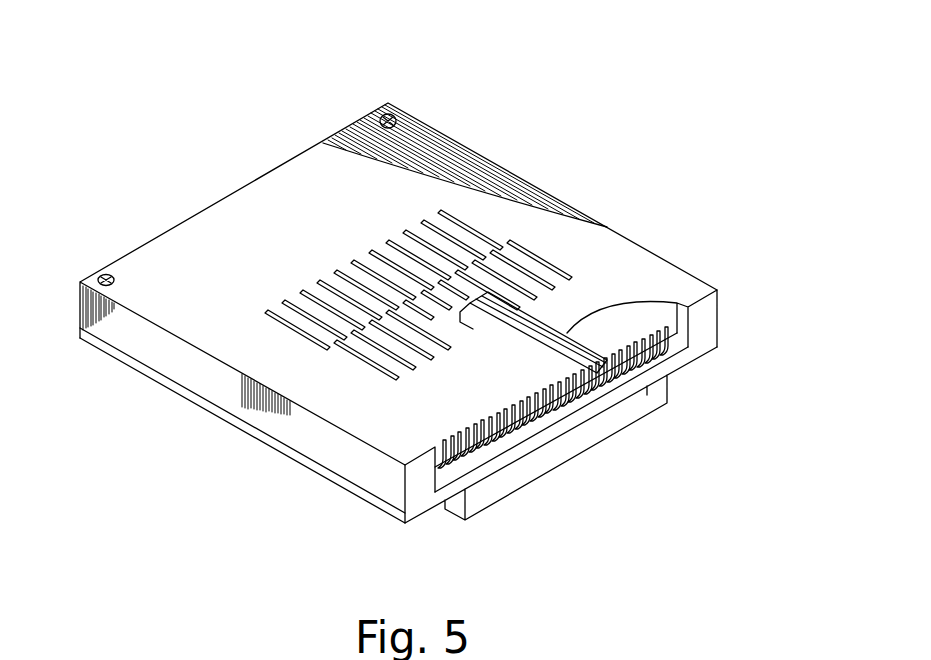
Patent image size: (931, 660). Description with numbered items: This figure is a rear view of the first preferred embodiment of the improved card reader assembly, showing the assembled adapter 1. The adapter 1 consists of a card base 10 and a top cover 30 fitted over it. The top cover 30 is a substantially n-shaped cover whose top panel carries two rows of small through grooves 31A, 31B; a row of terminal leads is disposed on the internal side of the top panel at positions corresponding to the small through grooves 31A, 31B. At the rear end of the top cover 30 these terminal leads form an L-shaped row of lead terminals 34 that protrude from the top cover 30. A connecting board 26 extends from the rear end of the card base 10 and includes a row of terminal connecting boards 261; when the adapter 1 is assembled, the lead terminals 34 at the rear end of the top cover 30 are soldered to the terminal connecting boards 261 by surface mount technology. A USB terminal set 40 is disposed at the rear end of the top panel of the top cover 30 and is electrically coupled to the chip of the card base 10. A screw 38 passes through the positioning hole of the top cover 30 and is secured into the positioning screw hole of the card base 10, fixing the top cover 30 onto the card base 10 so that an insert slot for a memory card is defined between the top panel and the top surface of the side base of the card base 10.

The adapter 1 is at (213, 192).
The card base 10 is at (360, 502).
The connecting board 26 is at (678, 352).
The terminal connecting boards 261 is at (655, 367).
The top cover 30 is at (567, 190).
The small through grooves 31A is at (375, 365).
The small through grooves 31B is at (273, 314).
The lead terminals 34 is at (610, 388).
The screw 38 is at (100, 276).
The USB terminal set 40 is at (690, 300).